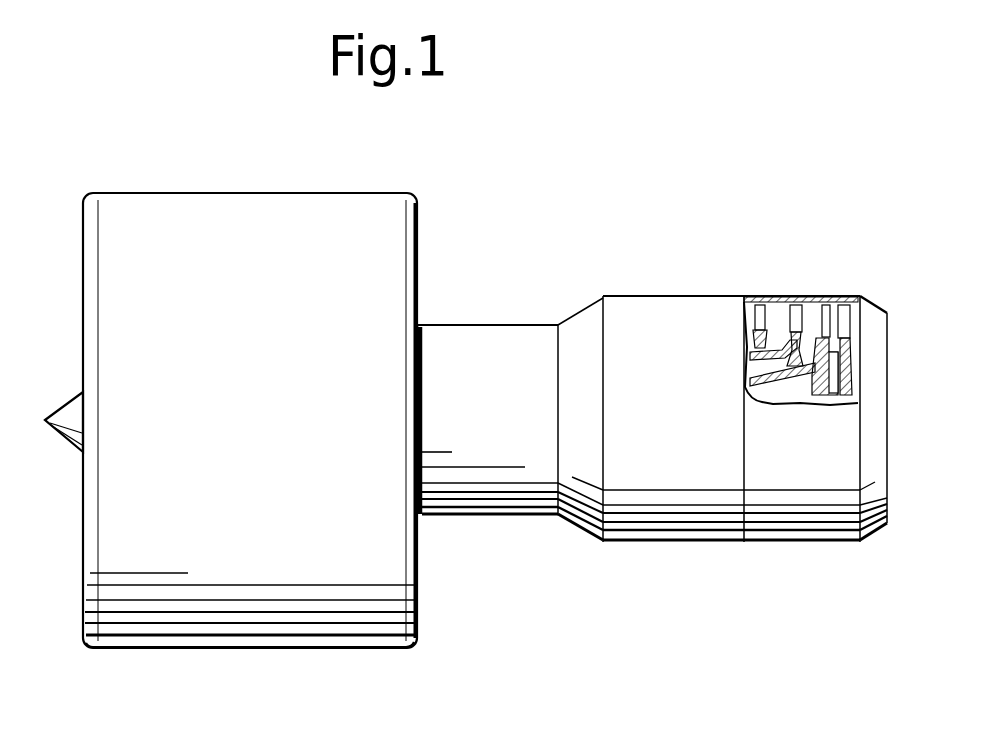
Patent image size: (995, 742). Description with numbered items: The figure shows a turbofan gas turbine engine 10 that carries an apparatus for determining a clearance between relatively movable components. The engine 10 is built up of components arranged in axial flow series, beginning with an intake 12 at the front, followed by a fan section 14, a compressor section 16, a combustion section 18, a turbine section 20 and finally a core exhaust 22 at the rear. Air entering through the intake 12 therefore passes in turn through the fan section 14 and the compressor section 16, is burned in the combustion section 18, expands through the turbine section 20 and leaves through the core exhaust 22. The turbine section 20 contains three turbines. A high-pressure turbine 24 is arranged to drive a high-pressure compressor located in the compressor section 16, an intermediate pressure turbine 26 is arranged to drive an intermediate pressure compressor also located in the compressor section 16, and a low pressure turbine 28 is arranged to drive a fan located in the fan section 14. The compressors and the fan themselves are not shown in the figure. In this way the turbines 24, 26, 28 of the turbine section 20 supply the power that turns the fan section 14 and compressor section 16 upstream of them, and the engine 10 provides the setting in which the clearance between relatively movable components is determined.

The turbofan gas turbine engine 10 is at (545, 228).
The intake 12 is at (83, 528).
The fan section 14 is at (357, 566).
The compressor section 16 is at (505, 450).
The combustion section 18 is at (653, 500).
The turbine section 20 is at (755, 512).
The core exhaust 22 is at (883, 495).
The high-pressure turbine 24 is at (757, 305).
The intermediate pressure turbine 26 is at (793, 304).
The low pressure turbine 28 is at (826, 304).